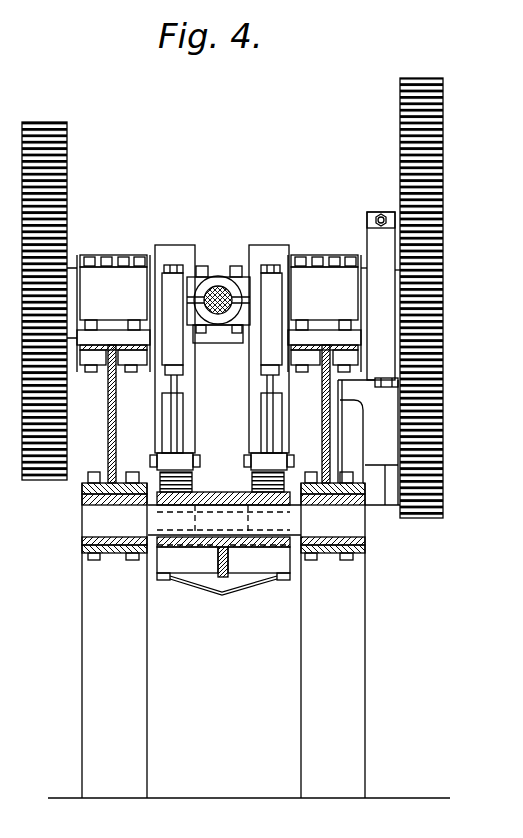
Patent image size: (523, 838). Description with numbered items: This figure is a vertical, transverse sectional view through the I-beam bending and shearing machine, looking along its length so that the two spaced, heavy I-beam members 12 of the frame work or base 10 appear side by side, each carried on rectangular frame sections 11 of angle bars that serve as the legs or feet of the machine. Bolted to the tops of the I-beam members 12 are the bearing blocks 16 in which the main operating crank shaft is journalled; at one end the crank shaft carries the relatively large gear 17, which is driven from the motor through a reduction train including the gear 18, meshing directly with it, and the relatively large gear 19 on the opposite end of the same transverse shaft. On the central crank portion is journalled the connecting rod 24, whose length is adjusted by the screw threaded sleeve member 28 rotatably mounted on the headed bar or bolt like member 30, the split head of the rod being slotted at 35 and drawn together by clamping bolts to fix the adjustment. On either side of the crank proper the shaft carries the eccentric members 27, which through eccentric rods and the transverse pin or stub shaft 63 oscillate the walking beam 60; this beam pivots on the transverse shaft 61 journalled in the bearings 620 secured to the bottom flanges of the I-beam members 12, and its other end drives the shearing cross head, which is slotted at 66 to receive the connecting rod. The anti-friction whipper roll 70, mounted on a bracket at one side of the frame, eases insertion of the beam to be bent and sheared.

The frame work or base 10 is at (366, 610).
The rectangular frame sections 11 is at (395, 388).
The I-beam members 12 is at (113, 421).
The bearing blocks 16 is at (108, 272).
The gear 17 is at (441, 282).
The gear 18 is at (443, 464).
The gear 19 is at (66, 238).
The connecting rod 24 is at (218, 287).
The eccentric members 27 is at (258, 352).
The screw threaded sleeve member 28 is at (202, 304).
The headed bar or bolt like member 30 is at (233, 300).
The longitudinal slot 35 is at (216, 304).
The walking beam 60 is at (250, 566).
The transverse shaft 61 is at (90, 521).
The bearings 620 is at (118, 561).
The transverse pin or stub shaft 63 is at (222, 493).
The slot 66 is at (258, 438).
The anti-friction whipper roll 70 is at (373, 247).